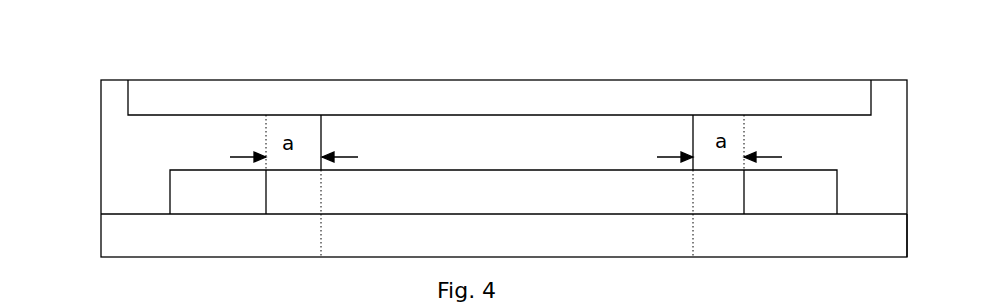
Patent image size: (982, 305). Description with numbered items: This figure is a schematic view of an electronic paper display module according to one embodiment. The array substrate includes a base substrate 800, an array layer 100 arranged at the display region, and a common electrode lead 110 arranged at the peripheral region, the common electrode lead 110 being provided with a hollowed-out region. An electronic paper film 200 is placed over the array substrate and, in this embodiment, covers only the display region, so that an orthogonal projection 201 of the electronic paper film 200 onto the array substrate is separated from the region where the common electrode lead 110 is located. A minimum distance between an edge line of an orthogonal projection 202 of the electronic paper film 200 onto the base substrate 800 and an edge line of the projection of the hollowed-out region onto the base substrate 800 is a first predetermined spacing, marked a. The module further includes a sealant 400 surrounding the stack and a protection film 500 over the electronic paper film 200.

The array layer 100 is at (307, 192).
The common electrode lead 110 is at (788, 197).
The electronic paper film 200 is at (397, 148).
The orthogonal projection of the electronic paper film onto the array substrate 201 is at (569, 205).
The orthogonal projection of the electronic paper film onto the base substrate 202 is at (499, 238).
The sealant 400 is at (112, 128).
The protection film 500 is at (658, 110).
The base substrate 800 is at (872, 238).